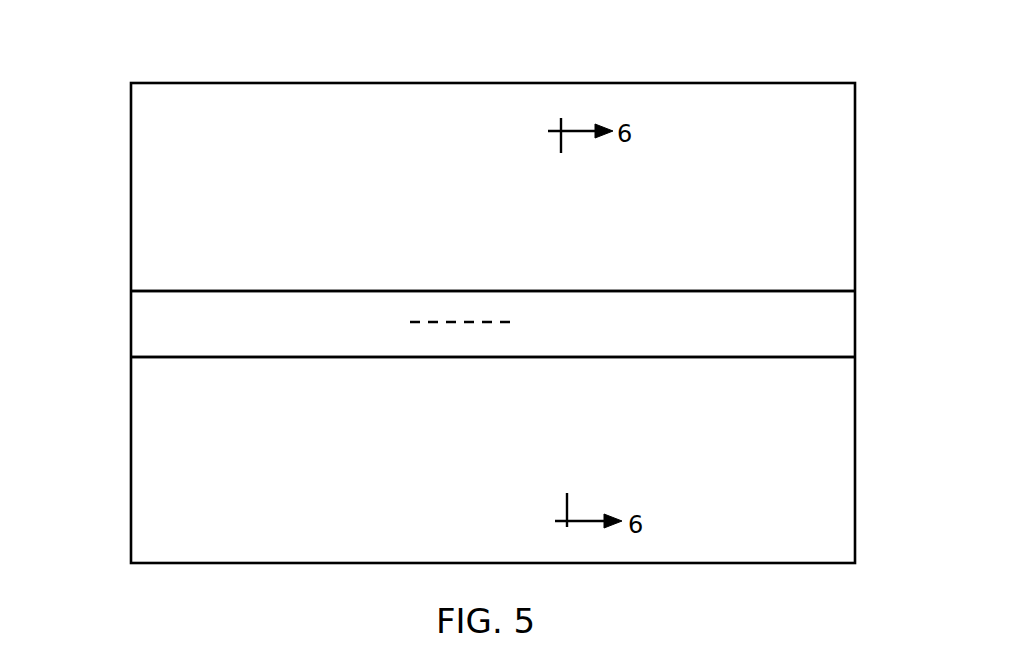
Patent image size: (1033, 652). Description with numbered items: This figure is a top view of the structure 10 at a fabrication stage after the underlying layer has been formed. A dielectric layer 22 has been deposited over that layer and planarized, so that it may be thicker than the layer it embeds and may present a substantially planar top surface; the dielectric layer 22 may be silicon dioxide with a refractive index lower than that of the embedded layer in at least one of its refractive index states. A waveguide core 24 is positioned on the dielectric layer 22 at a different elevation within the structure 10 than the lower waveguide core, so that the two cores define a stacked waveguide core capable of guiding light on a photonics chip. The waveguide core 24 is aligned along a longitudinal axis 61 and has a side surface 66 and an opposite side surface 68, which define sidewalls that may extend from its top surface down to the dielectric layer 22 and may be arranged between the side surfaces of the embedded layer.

The structure 10 is at (124, 54).
The dielectric layer 22 is at (815, 503).
The waveguide core 24 is at (807, 327).
The longitudinal axis 61 is at (462, 323).
The side surface 66 is at (231, 291).
The opposite side surface 68 is at (243, 357).